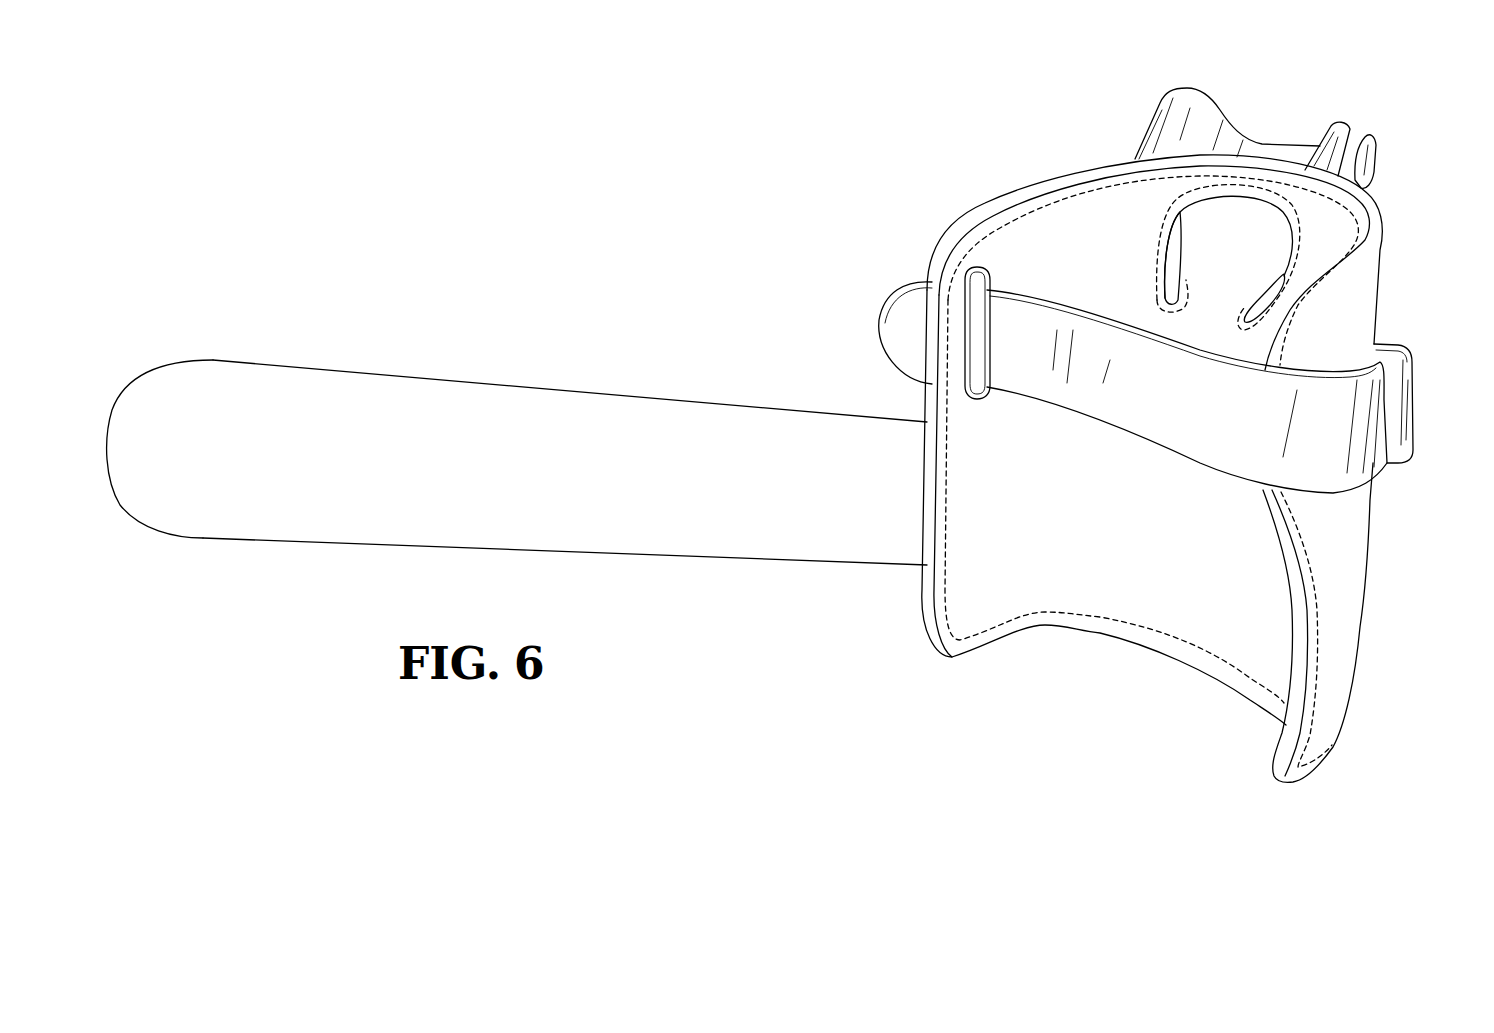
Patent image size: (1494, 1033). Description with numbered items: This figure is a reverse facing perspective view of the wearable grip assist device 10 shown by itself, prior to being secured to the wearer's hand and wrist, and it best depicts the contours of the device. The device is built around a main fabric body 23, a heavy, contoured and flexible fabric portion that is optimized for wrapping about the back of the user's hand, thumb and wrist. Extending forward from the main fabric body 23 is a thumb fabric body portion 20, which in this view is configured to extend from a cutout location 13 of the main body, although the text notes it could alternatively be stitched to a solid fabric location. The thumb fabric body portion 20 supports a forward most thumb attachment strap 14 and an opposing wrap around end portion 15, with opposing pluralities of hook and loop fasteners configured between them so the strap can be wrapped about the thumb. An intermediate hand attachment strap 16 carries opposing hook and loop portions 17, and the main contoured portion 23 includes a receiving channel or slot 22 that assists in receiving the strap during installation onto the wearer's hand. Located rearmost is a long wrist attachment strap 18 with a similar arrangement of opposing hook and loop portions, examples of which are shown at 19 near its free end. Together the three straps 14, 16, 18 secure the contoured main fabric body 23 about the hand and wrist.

The wearable grip assist device 10 is at (813, 117).
The cutout location 13 is at (1166, 272).
The thumb attachment strap 14 is at (1334, 127).
The wrap around end portion 15 is at (1380, 150).
The hand attachment strap 16 is at (1017, 315).
The hook and loop portions 17 is at (882, 330).
The wrist attachment strap 18 is at (315, 525).
The hook and loop portions 19 is at (112, 414).
The thumb fabric body portion 20 is at (1160, 121).
The receiving channel or slot 22 is at (984, 268).
The main fabric body 23 is at (1128, 605).